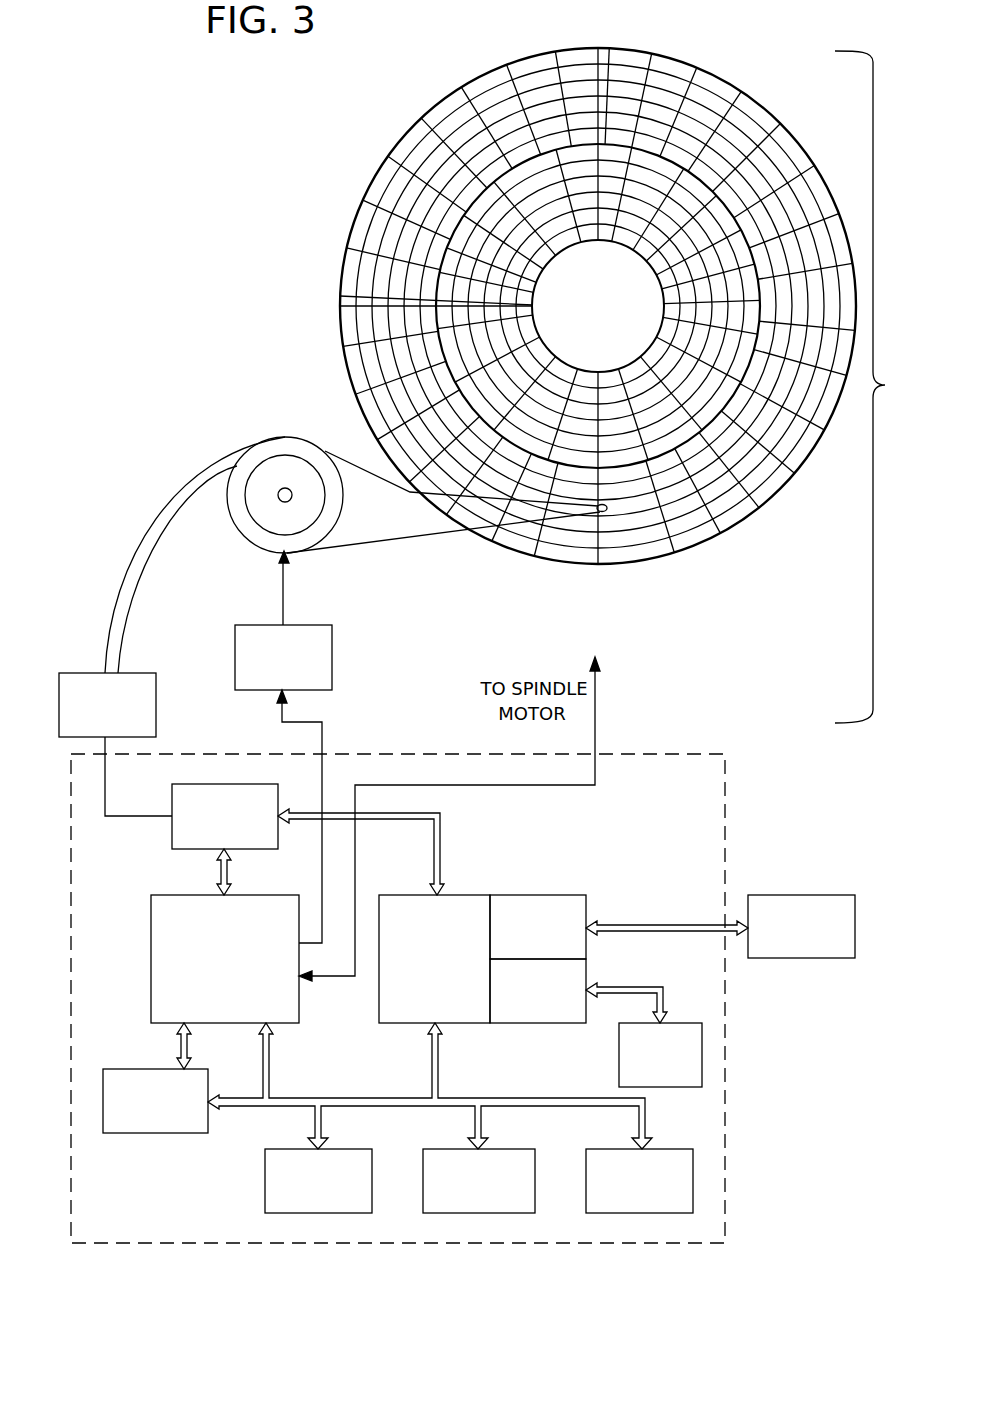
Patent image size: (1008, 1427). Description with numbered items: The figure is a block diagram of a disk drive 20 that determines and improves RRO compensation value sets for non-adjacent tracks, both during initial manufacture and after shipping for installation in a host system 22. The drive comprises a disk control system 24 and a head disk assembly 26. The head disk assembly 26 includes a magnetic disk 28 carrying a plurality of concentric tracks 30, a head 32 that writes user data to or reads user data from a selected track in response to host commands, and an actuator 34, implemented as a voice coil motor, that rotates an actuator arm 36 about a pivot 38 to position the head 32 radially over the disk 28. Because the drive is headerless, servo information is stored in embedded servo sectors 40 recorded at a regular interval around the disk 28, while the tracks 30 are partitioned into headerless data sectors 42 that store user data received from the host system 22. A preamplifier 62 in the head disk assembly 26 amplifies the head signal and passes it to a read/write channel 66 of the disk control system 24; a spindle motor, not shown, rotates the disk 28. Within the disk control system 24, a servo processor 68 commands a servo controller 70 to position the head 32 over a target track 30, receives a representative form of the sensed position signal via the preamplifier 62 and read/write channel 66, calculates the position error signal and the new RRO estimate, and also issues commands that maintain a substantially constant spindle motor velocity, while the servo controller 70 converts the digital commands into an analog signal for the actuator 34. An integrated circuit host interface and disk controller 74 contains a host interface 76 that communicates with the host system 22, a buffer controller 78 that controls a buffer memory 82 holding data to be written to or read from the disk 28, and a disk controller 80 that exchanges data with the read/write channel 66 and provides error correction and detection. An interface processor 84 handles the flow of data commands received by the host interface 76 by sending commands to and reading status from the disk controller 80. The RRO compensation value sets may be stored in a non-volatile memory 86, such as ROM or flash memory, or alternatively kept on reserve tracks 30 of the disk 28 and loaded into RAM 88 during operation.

The disk drive 20 is at (225, 123).
The host system 22 is at (790, 954).
The disk control system 24 is at (727, 833).
The head disk assembly 26 is at (875, 387).
The magnetic disk 28 is at (760, 106).
The concentric tracks 30 is at (730, 512).
The head 32 is at (608, 518).
The actuator 34 is at (271, 682).
The actuator arm 36 is at (422, 528).
The pivot 38 is at (279, 500).
The embedded servo sectors 40 is at (423, 127).
The headerless data sectors 42 is at (363, 218).
The preamplifier 62 is at (95, 731).
The read/write channel 66 is at (214, 848).
The servo processor 68 is at (144, 1129).
The servo controller 70 is at (214, 989).
The host interface and disk controller 74 is at (476, 893).
The host interface 76 is at (527, 956).
The buffer controller 78 is at (527, 1019).
The disk controller 80 is at (423, 986).
The buffer memory 82 is at (649, 1079).
The interface processor 84 is at (629, 1207).
The non-volatile memory 86 is at (468, 1207).
The RAM 88 is at (307, 1199).